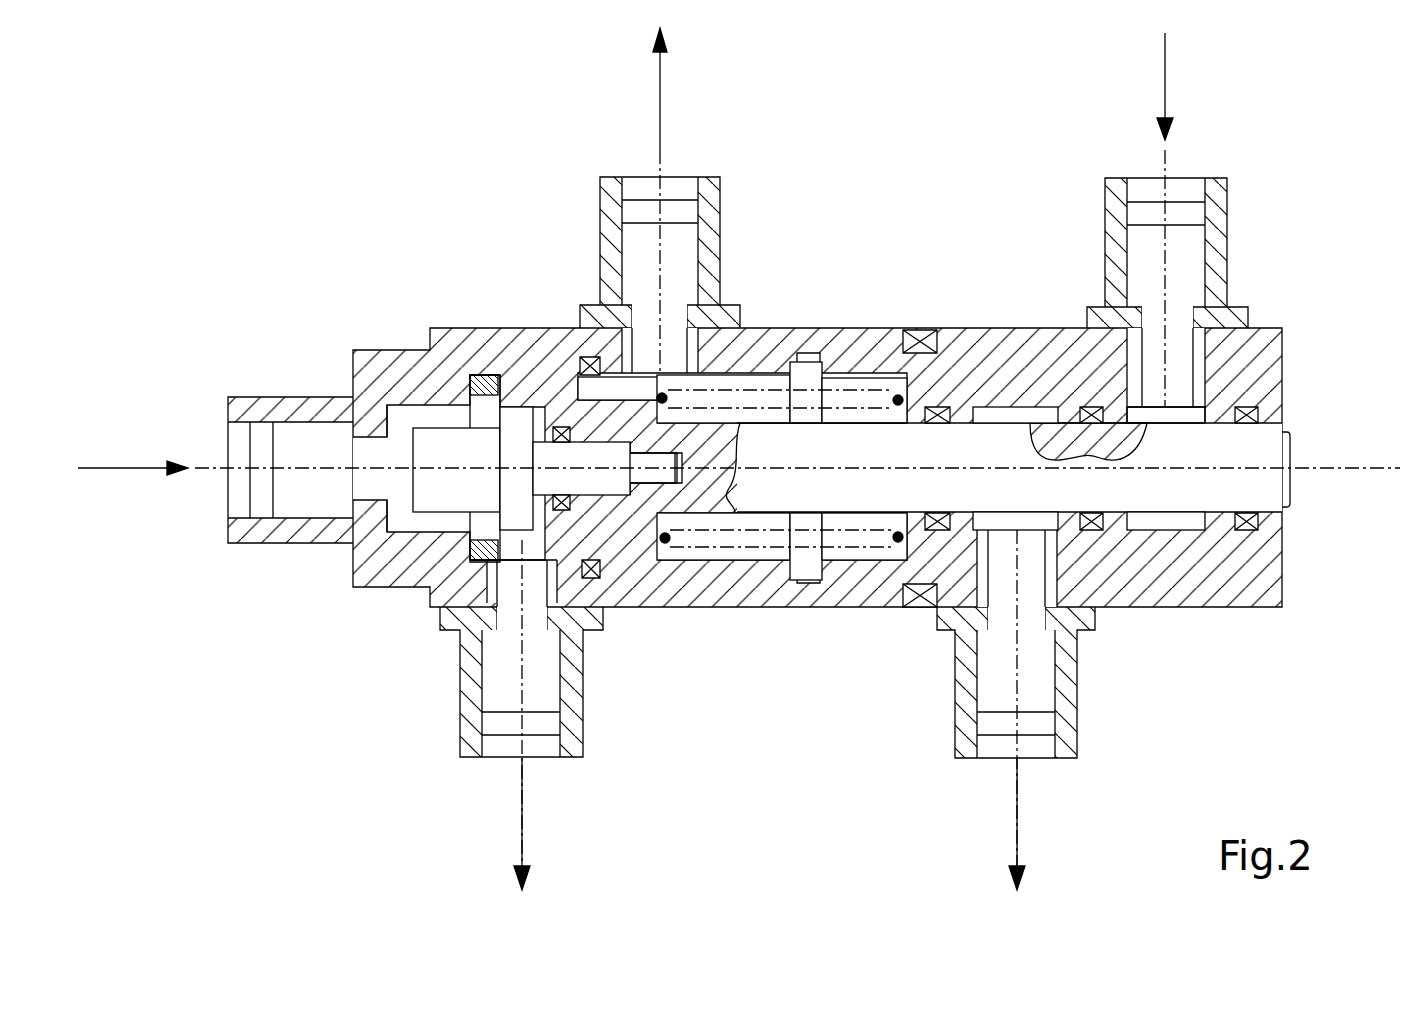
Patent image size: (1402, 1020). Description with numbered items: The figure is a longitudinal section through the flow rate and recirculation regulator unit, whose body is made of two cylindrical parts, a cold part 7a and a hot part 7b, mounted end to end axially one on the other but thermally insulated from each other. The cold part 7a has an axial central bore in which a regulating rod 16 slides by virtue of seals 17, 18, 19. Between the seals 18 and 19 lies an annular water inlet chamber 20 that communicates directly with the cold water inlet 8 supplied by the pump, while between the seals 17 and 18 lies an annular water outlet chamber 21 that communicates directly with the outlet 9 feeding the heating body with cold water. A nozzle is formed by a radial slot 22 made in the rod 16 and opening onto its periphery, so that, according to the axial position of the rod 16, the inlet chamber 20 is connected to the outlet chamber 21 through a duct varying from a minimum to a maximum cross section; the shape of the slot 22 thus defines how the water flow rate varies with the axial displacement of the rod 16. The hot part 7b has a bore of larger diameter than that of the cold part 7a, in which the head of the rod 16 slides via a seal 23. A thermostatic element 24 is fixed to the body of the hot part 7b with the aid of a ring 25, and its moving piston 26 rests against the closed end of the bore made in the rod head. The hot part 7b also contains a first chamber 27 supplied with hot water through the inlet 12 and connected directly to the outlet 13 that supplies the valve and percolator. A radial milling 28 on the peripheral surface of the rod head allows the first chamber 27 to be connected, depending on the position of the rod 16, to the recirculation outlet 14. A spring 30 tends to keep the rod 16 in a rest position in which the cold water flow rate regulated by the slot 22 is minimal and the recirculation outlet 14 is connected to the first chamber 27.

The cold part 7a is at (1248, 598).
The hot part 7b is at (688, 600).
The cold water inlet 8 is at (1167, 180).
The outlet 9 is at (1016, 748).
The inlet of the hot part 12 is at (290, 470).
The outlet of the hot part 13 is at (521, 748).
The recirculation outlet 14 is at (660, 178).
The regulating rod 16 is at (1013, 467).
The seal 17 is at (938, 513).
The seal 18 is at (1090, 522).
The seal 19 is at (1248, 520).
The water inlet chamber 20 is at (1180, 417).
The water outlet chamber 21 is at (991, 415).
The radial slot 22 is at (1068, 432).
The seal 23 is at (592, 365).
The thermostatic element 24 is at (545, 468).
The ring 25 is at (470, 553).
The moving piston 26 is at (728, 490).
The first chamber 27 is at (400, 420).
The radial milling 28 is at (645, 387).
The spring 30 is at (762, 390).